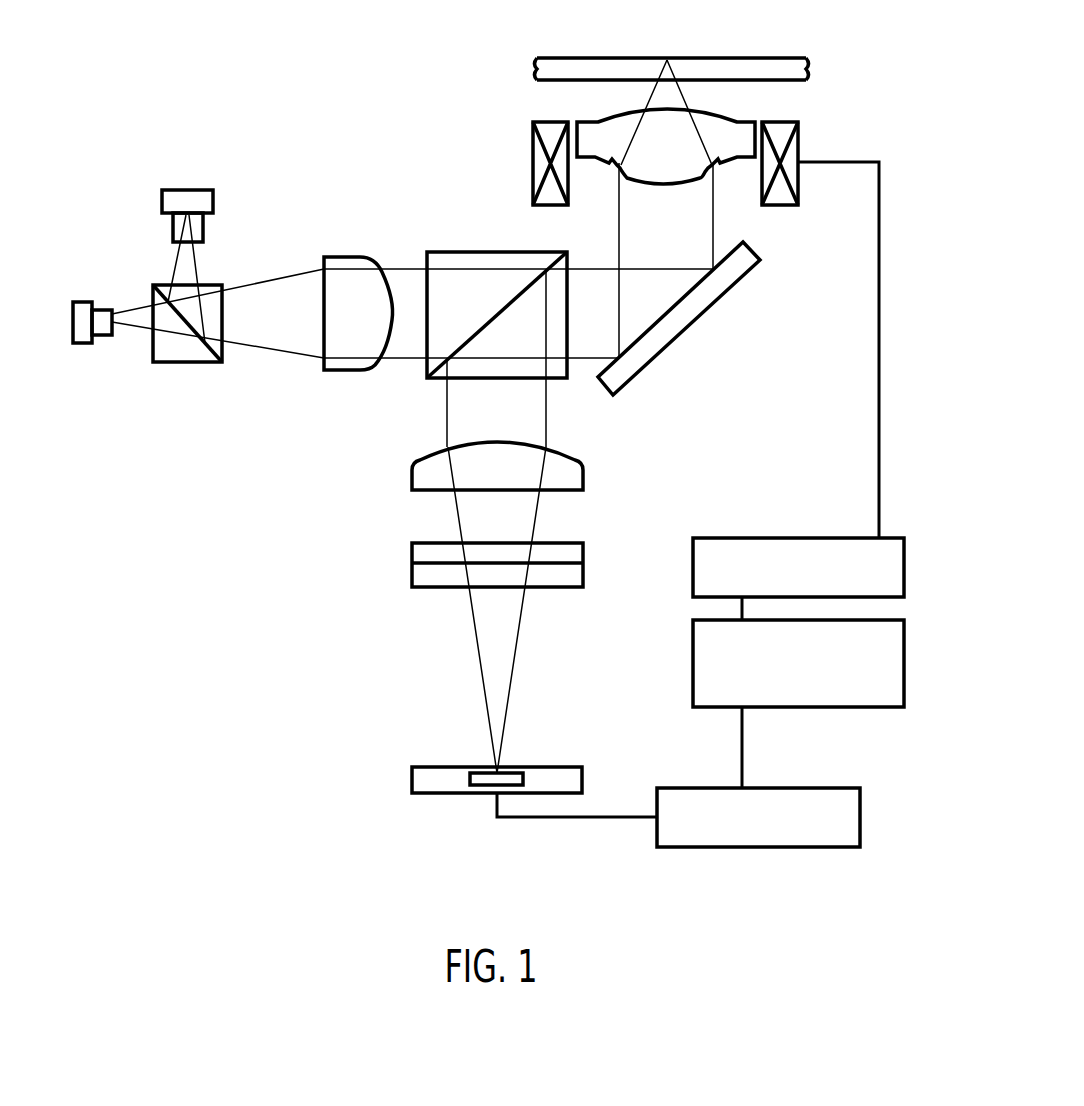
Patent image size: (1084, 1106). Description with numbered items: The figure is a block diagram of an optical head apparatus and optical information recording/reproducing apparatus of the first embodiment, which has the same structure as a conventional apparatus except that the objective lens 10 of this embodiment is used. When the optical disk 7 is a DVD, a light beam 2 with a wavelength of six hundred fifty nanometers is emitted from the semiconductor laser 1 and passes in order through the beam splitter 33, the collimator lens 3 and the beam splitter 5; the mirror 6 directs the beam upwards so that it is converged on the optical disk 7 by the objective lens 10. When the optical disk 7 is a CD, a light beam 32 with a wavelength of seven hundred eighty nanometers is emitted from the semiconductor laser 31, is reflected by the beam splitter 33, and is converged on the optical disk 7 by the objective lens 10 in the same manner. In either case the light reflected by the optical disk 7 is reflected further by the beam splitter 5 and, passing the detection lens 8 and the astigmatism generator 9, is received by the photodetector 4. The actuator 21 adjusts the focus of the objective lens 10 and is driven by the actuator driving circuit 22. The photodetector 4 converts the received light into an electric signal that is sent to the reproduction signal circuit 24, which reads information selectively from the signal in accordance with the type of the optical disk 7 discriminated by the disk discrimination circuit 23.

The semiconductor laser 1 is at (83, 343).
The light beam 2 is at (132, 310).
The collimator lens 3 is at (340, 365).
The photodetector 4 is at (440, 785).
The beam splitter 5 is at (455, 257).
The mirror 6 is at (662, 343).
The optical disk 7 is at (598, 65).
The detection lens 8 is at (577, 473).
The astigmatism generator 9 is at (583, 563).
The objective lens 10 is at (607, 127).
The actuator 21 is at (798, 140).
The actuator (ACT) driving circuit 22 is at (783, 537).
The disk discrimination circuit 23 is at (873, 707).
The reproduction signal circuit 24 is at (752, 847).
The semiconductor laser 31 is at (190, 198).
The light beam 32 is at (195, 265).
The beam splitter 33 is at (172, 353).